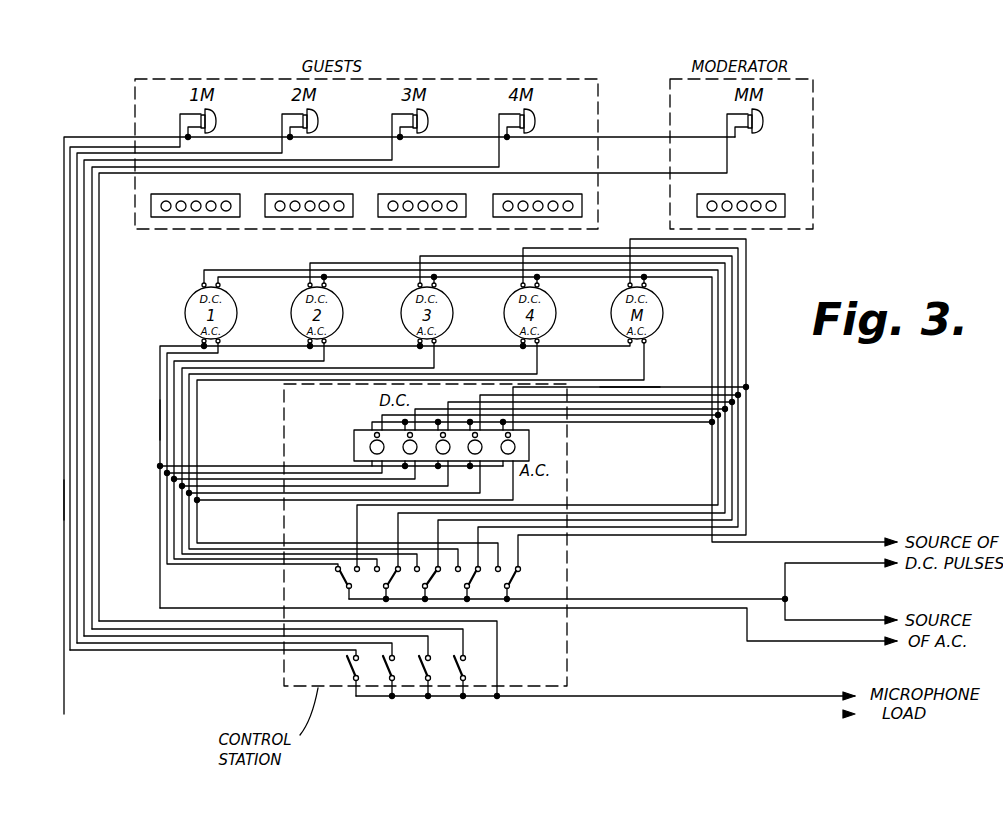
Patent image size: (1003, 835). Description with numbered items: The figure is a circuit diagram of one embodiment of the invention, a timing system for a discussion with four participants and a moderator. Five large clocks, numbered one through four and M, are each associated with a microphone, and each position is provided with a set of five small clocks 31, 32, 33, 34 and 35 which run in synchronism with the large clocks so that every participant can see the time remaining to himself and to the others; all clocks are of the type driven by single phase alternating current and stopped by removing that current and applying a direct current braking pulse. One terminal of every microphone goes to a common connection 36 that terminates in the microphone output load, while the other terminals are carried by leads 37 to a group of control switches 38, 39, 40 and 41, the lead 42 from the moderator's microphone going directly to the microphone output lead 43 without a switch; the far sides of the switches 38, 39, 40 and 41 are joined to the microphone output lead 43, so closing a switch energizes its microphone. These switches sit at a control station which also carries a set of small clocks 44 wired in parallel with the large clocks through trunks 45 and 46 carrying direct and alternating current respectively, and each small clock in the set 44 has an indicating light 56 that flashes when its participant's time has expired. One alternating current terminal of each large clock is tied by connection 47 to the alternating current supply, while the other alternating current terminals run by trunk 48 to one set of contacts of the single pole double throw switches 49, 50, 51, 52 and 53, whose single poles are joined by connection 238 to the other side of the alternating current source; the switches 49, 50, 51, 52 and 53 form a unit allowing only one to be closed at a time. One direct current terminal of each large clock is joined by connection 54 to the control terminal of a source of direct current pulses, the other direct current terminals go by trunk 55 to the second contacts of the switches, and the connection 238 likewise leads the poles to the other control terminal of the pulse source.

The small clock 31 is at (196, 194).
The small clock 32 is at (307, 194).
The small clock 33 is at (416, 194).
The small clock 34 is at (524, 194).
The small clock 35 is at (747, 194).
The common connection 36 is at (608, 137).
The leads 37 is at (103, 497).
The control switch 38 is at (351, 661).
The control switch 39 is at (387, 661).
The control switch 40 is at (423, 661).
The control switch 41 is at (458, 661).
The lead from the moderator's microphone 42 is at (497, 668).
The microphone output lead 43 is at (672, 696).
The set of small clocks 44 is at (354, 444).
The trunk 45 is at (641, 425).
The trunk 46 is at (240, 502).
The connection 47 is at (160, 386).
The trunk 48 is at (201, 419).
The single pole double throw switch 49 is at (342, 578).
The single pole double throw switch 50 is at (391, 577).
The single pole double throw switch 51 is at (430, 577).
The single pole double throw switch 52 is at (471, 577).
The single pole double throw switch 53 is at (513, 577).
The connection 54 is at (712, 320).
The trunk 55 is at (751, 343).
The indicating light 56 is at (529, 432).
The connection 238 is at (632, 599).